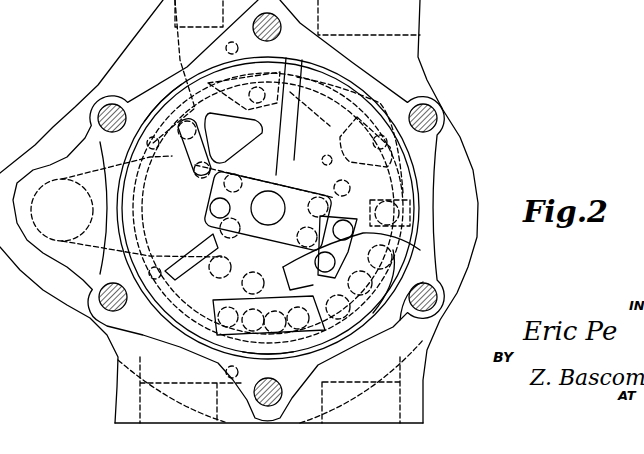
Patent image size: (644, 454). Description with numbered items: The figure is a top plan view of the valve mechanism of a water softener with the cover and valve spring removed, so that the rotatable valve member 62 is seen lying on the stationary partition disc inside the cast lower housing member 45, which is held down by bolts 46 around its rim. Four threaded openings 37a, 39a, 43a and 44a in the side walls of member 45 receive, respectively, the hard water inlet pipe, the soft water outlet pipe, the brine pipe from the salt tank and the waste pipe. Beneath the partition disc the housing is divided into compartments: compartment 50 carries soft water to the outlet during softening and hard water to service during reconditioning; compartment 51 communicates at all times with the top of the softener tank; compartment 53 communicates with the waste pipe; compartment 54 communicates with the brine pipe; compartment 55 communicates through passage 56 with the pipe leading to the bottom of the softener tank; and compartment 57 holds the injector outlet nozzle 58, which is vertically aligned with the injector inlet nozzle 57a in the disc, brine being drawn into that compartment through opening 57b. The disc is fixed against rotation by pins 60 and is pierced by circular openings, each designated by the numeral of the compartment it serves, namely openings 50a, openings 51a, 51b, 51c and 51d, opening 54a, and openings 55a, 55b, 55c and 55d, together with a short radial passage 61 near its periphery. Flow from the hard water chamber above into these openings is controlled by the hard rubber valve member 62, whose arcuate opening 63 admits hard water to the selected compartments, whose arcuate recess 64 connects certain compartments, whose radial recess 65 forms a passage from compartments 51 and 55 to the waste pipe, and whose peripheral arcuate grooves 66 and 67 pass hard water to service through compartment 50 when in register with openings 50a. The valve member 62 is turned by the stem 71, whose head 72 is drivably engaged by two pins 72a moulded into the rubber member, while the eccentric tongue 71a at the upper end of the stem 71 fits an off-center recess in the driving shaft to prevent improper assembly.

The opening 37a is at (145, 405).
The opening 39a is at (400, 400).
The opening 43a is at (160, 7).
The opening 44a is at (400, 12).
The lower housing member 45 is at (61, 132).
The bolts 46 is at (98, 101).
The compartment 50 is at (405, 252).
The circular openings 50a is at (398, 290).
The compartment 51 is at (362, 184).
The circular opening 51a is at (334, 246).
The circular opening 51b is at (300, 234).
The circular opening 51c is at (343, 180).
The circular opening 51d is at (330, 156).
The compartment 53 is at (328, 124).
The compartment 54 is at (241, 210).
The circular opening 54a is at (244, 91).
The compartment 55 is at (157, 245).
The circular opening 55a is at (307, 290).
The circular opening 55b is at (240, 290).
The circular opening 55c is at (212, 273).
The circular opening 55d is at (239, 170).
The passage 56 is at (56, 218).
The compartment 57 is at (180, 140).
The injector inlet nozzle 57a is at (196, 173).
The opening 57b is at (205, 128).
The injector outlet nozzle 58 is at (200, 180).
The pins 60 is at (147, 143).
The short radial passage 61 is at (422, 207).
The rotatable valve member 62 is at (170, 92).
The arcuate opening 63 is at (424, 246).
The arcuate recess 64 is at (270, 352).
The recess 65 is at (292, 157).
The arcuate groove 66 is at (372, 100).
The arcuate groove 67 is at (152, 112).
The stem 71 is at (243, 257).
The eccentric tongue 71a is at (272, 205).
The head 72 is at (338, 188).
The pins 72a is at (213, 237).